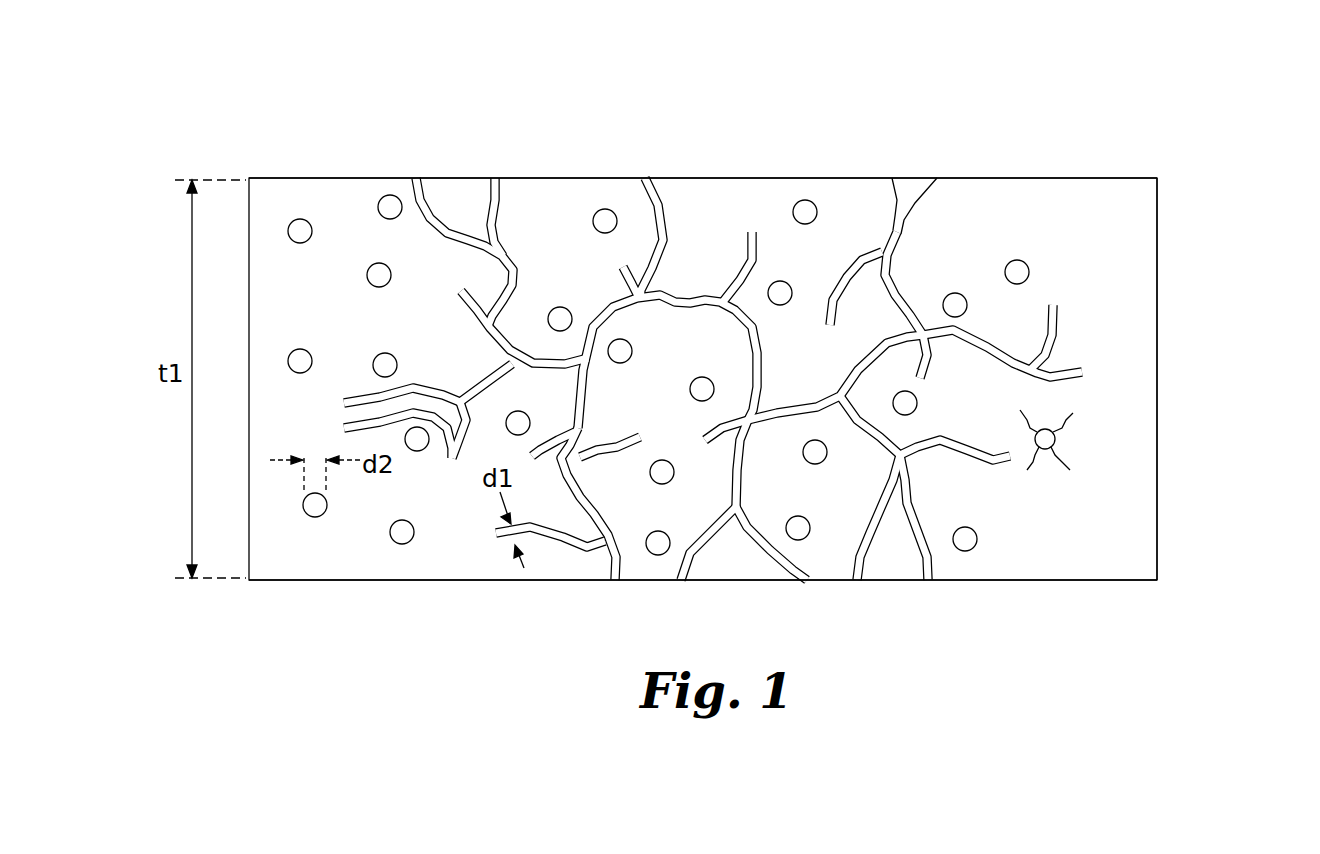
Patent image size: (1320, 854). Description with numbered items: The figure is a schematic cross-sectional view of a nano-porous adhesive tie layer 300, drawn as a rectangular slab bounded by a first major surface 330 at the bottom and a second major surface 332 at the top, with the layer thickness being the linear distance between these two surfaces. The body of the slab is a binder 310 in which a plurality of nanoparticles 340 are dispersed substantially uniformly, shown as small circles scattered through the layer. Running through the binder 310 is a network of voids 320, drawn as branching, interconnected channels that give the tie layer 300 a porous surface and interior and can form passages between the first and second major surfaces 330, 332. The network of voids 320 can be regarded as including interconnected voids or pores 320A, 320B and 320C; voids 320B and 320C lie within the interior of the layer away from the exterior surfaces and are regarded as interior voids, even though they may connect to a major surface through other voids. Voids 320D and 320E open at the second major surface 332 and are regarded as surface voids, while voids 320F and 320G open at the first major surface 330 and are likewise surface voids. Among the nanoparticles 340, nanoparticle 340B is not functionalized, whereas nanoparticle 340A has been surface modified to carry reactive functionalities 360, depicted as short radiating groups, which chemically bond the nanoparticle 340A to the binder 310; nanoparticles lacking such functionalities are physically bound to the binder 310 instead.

The nano-porous adhesive tie layer 300 is at (237, 108).
The binder 310 is at (1147, 268).
The network of voids 320 is at (662, 202).
The void 320A is at (978, 333).
The interior void 320B is at (943, 455).
The interior void 320C is at (808, 400).
The surface void 320D is at (398, 178).
The surface void 320E is at (472, 178).
The surface void 320F is at (597, 582).
The surface void 320G is at (767, 557).
The first major surface 330 is at (1078, 580).
The second major surface 332 is at (1105, 178).
The nanoparticles 340 is at (300, 348).
The functionalized nanoparticle 340A is at (400, 545).
The non-functionalized nanoparticle 340B is at (300, 219).
The reactive functionalities 360 is at (1067, 421).